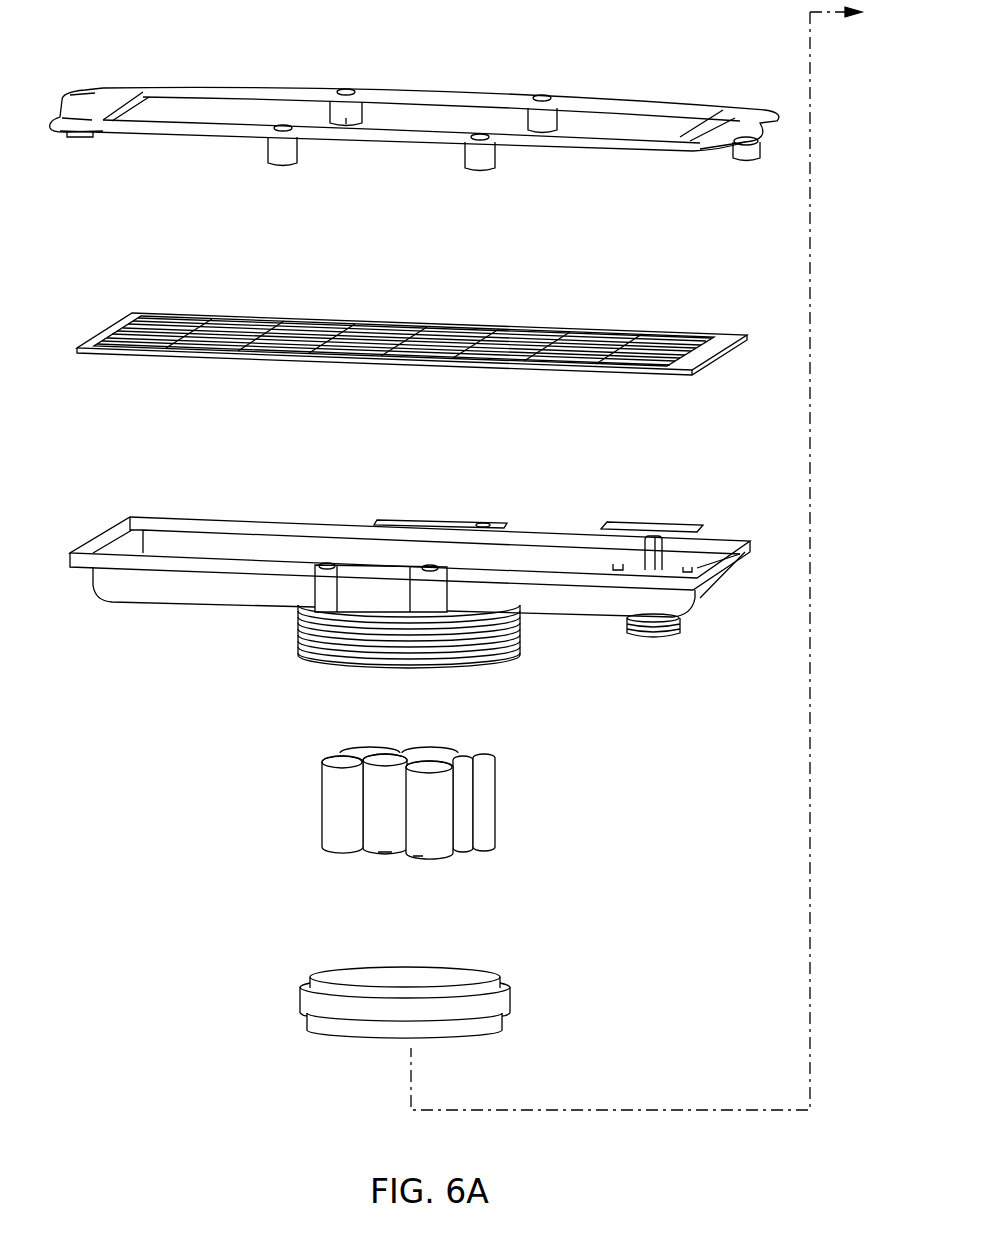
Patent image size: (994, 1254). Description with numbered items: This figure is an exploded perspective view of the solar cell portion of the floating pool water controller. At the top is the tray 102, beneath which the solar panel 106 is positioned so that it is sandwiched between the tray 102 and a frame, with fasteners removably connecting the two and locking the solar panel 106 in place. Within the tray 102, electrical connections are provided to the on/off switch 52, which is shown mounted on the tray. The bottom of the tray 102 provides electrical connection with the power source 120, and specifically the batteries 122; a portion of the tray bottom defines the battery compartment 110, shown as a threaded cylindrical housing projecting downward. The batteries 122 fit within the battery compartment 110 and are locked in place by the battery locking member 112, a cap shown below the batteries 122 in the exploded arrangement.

The tray 102 is at (738, 110).
The solar panel 106 is at (725, 338).
The on/off switch 52 is at (648, 535).
The battery compartment 110 is at (300, 637).
The batteries 122 is at (488, 802).
The battery locking member 112 is at (507, 1005).
The power source 120 is at (273, 889).